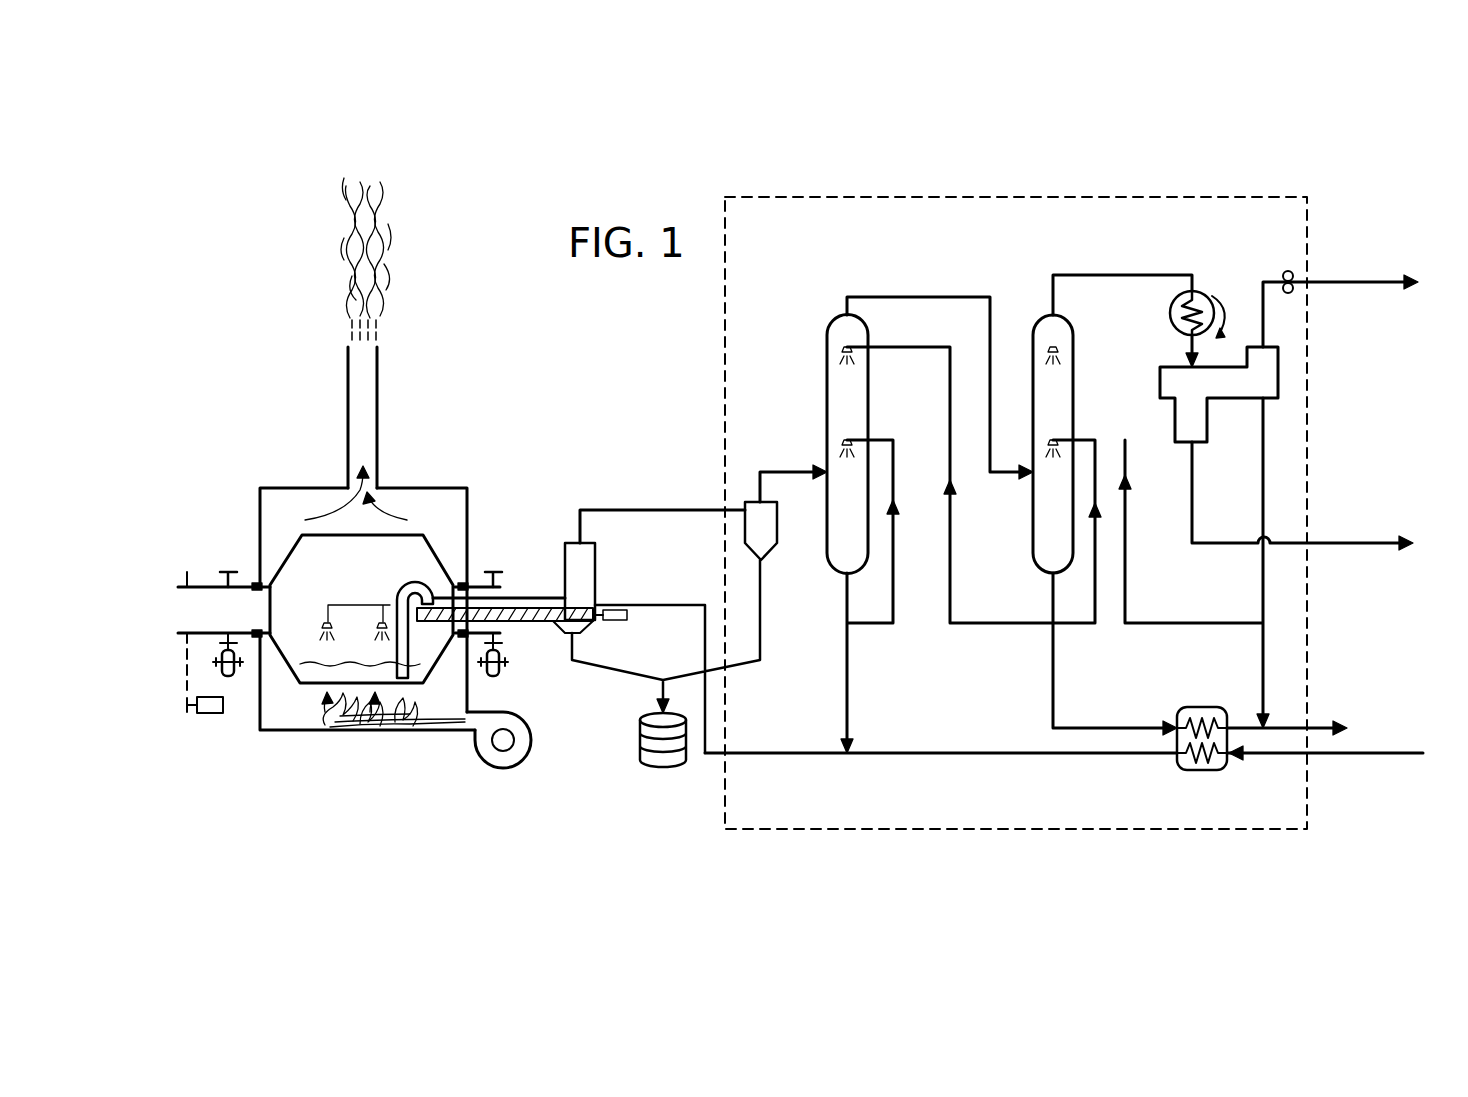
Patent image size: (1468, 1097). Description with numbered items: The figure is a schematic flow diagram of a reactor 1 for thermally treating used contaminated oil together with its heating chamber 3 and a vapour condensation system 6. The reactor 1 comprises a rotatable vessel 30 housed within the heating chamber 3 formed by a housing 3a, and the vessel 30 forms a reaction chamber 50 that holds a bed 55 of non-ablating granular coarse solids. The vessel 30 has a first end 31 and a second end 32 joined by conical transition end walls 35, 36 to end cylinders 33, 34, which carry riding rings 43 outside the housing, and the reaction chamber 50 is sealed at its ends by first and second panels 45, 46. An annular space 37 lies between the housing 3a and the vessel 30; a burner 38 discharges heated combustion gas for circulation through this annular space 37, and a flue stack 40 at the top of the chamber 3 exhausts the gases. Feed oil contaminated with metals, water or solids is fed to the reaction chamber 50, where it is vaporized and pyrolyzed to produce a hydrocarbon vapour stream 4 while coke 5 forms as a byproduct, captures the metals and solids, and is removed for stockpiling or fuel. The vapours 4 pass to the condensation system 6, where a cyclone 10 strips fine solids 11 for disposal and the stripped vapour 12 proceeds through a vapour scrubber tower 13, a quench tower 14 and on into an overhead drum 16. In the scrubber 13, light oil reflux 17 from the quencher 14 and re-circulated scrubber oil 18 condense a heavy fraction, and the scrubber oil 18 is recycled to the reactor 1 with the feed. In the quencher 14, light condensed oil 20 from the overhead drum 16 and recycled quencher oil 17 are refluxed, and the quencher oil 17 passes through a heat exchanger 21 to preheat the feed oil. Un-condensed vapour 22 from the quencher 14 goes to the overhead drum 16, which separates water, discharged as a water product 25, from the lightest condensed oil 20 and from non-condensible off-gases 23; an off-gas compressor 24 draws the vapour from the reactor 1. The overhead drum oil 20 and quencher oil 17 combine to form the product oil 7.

The reactor 1 is at (352, 564).
The heating chamber 3 is at (414, 498).
The housing 3a is at (290, 730).
The hydrocarbon vapour stream 4 is at (653, 510).
The coke 5 is at (600, 664).
The vapour condensation system 6 is at (725, 350).
The product oil 7 is at (1285, 724).
The cyclone 10 is at (777, 535).
The fine solids 11 is at (761, 606).
The stripped vapour 12 is at (803, 472).
The vapour scrubber tower 13 is at (827, 400).
The quench tower 14 is at (1040, 323).
The overhead drum 16 is at (1280, 375).
The quencher oil 17 is at (950, 553).
The scrubber oil 18 is at (846, 610).
The light condensed oil 20 is at (1125, 561).
The heat exchanger 21 is at (1194, 707).
The un-condensed vapour 22 is at (1127, 276).
The off-gases 23 is at (1314, 282).
The off-gas compressor 24 is at (1288, 272).
The water product 25 is at (1242, 548).
The rotatable vessel 30 is at (317, 535).
The first end 31 is at (190, 616).
The second end 32 is at (503, 625).
The end cylinder 33 is at (208, 586).
The end cylinder 34 is at (500, 598).
The conical transition end wall 35 is at (284, 658).
The conical transition end wall 36 is at (442, 658).
The annular space 37 is at (366, 609).
The burner 38 is at (481, 758).
The flue stack 40 is at (377, 425).
The riding ring 43 is at (226, 570).
The first panel 45 is at (260, 596).
The second panel 46 is at (470, 582).
The reaction chamber 50 is at (361, 609).
The bed 55 is at (352, 661).